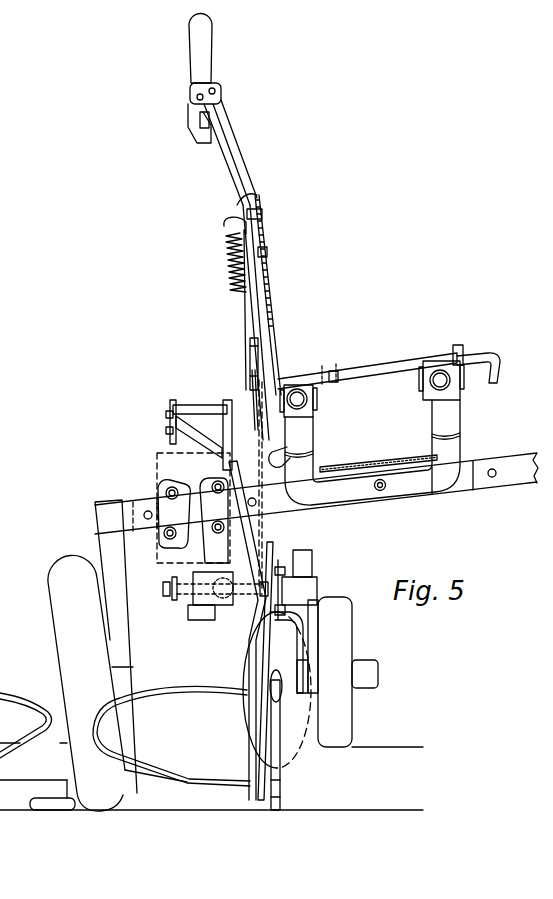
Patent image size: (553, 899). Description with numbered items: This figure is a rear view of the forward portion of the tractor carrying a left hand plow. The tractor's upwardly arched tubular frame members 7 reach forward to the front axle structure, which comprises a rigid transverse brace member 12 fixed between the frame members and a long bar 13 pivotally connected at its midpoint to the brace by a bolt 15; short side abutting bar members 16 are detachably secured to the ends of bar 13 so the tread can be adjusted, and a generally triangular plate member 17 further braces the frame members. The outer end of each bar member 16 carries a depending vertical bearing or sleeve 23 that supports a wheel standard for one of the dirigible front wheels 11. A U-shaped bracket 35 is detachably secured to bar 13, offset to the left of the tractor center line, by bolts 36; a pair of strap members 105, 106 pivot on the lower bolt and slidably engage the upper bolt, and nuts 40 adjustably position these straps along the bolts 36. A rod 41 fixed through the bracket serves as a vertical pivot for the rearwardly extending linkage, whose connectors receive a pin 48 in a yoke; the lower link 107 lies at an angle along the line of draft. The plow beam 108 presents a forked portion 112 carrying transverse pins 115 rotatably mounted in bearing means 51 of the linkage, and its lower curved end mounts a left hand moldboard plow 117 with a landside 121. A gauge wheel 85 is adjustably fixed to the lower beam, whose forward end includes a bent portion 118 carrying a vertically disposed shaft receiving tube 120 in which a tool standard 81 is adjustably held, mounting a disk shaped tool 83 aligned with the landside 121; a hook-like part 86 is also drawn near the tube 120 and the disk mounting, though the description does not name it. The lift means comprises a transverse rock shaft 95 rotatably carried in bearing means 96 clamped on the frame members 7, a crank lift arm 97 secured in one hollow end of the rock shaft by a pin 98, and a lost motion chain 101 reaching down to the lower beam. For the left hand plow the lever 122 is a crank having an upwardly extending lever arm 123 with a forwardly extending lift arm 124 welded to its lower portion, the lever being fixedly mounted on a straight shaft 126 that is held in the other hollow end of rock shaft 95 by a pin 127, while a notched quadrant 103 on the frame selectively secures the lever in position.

The tubular frame members 7 is at (313, 440).
The dirigible front wheels 11 is at (53, 613).
The transverse brace member 12 is at (413, 491).
The bar 13 is at (462, 487).
The bolt 15 is at (379, 492).
The side abutting bar members 16 is at (510, 487).
The triangular shaped plate member 17 is at (400, 463).
The vertical bearing or sleeve 23 is at (97, 538).
The U-shaped bracket 35 is at (175, 453).
The bolts 36 is at (173, 505).
The nuts 40 is at (163, 537).
The rod 41 is at (197, 621).
The pin 48 is at (165, 430).
The bearing means 51 is at (195, 405).
The tool standard 81 is at (312, 560).
The disk shaped tool 83 is at (290, 748).
The gauge wheel 85 is at (345, 720).
The hook 86 is at (303, 658).
The transverse rock shaft 95 is at (388, 362).
The bearing means 96 is at (312, 361).
The lift arm 97 is at (491, 358).
The pin 98 is at (459, 346).
The chain 101 is at (262, 538).
The notched quadrant 103 is at (270, 298).
The strap member 105 is at (163, 492).
The strap member 106 is at (215, 545).
The lower link 107 is at (238, 627).
The beam 108 is at (247, 756).
The forked portion 112 is at (170, 402).
The transverse pins 115 is at (166, 414).
The left hand moldboard plow 117 is at (187, 731).
The bent portion 118 is at (316, 582).
The shaft receiving tube 120 is at (318, 595).
The landside 121 is at (282, 796).
The lever 122 is at (252, 326).
The lever arm 123 is at (228, 170).
The lift arm 124 is at (252, 400).
The straight shaft 126 is at (333, 370).
The pin 127 is at (326, 366).